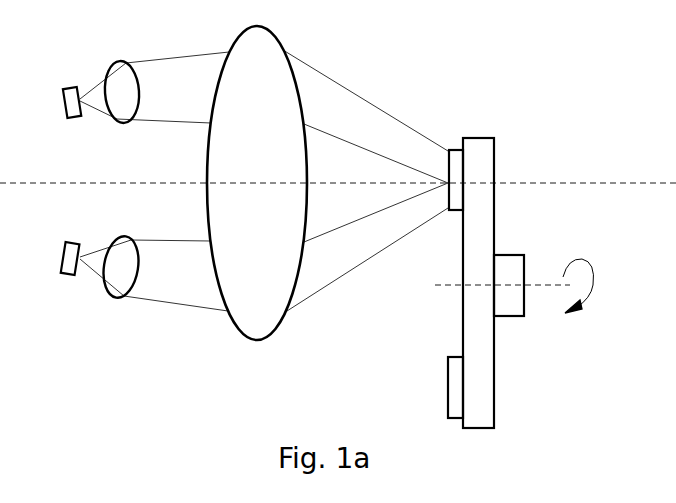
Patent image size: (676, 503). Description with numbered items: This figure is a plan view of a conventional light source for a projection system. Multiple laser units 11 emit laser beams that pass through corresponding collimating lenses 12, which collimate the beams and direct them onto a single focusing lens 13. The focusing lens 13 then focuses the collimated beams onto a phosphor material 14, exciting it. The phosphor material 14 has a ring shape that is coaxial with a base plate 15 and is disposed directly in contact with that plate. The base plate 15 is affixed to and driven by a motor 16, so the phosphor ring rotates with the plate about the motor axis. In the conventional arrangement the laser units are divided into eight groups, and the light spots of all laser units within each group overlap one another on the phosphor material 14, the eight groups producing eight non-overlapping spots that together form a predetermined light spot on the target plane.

The laser unit 11 is at (68, 88).
The collimating lens 12 is at (122, 76).
The focusing lens 13 is at (254, 324).
The phosphor material 14 is at (455, 164).
The base plate 15 is at (487, 160).
The motor 16 is at (508, 295).